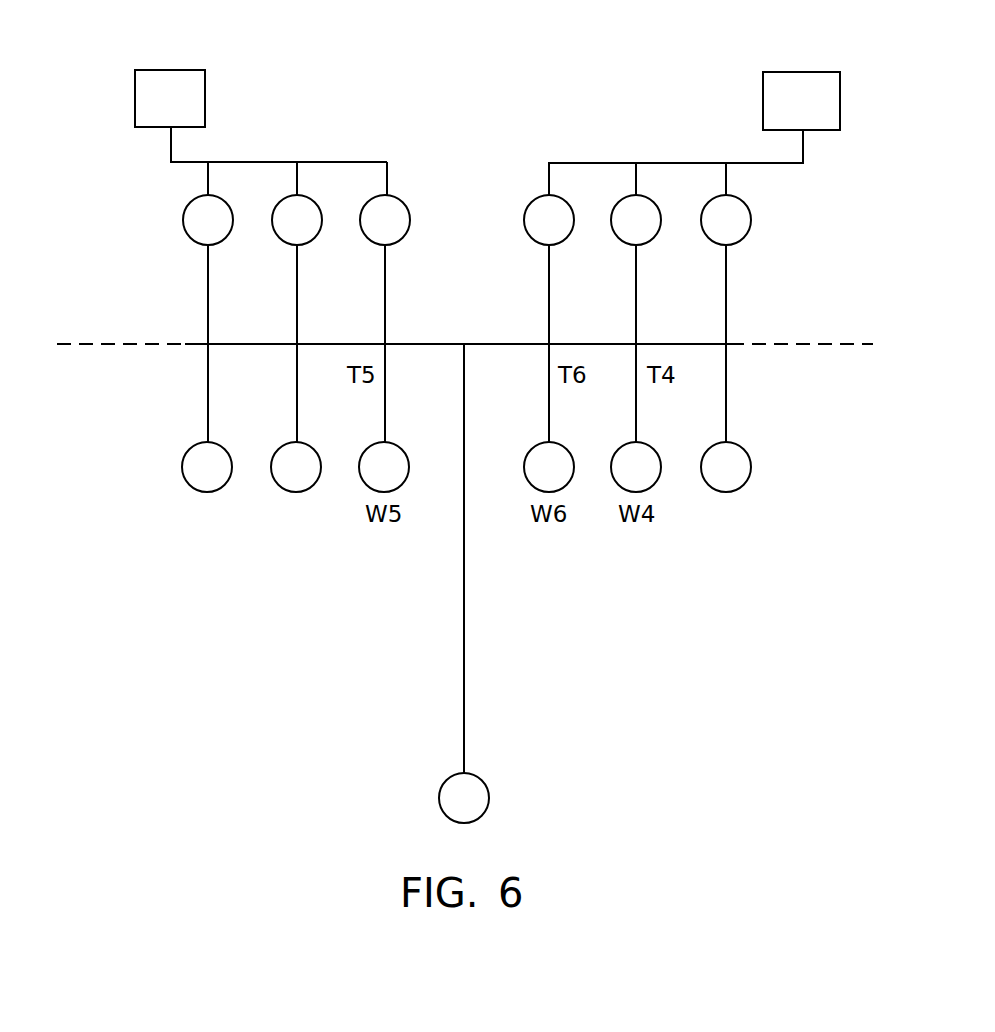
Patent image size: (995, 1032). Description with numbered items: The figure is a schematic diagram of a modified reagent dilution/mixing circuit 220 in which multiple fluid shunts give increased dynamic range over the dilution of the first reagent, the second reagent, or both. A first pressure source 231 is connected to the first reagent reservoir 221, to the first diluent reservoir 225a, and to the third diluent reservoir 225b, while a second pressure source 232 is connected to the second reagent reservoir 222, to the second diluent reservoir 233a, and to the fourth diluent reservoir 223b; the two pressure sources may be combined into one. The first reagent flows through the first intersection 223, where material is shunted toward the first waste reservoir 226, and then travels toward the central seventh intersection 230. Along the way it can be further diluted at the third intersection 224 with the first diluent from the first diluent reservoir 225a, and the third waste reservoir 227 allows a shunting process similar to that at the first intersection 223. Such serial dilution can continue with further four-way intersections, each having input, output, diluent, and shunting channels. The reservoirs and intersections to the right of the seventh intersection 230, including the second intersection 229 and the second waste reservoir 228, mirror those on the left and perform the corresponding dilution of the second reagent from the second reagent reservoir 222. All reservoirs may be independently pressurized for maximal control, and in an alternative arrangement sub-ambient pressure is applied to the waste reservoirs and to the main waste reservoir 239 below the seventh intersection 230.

The terminal block wiring arrangement 220 is at (628, 640).
The R1 reservoir 221 is at (183, 222).
The R2 reservoir 222 is at (751, 220).
The T1 intersection 223 is at (205, 344).
The T3 intersection 224 is at (296, 344).
The D1 reservoir 225a is at (278, 201).
The D3 reservoir 225b is at (401, 203).
The D4 reservoir 223b is at (567, 202).
The D2 reservoir 233a is at (654, 202).
The wire W1 226 is at (182, 471).
The W3 reservoir 227 is at (278, 485).
The wire W2 228 is at (751, 470).
The terminal connection T2 229 is at (728, 344).
The T7 intersection 230 is at (468, 344).
The first pressure source 231 is at (185, 72).
The second pressure source 232 is at (795, 78).
The main waste reservoir 239 is at (487, 793).